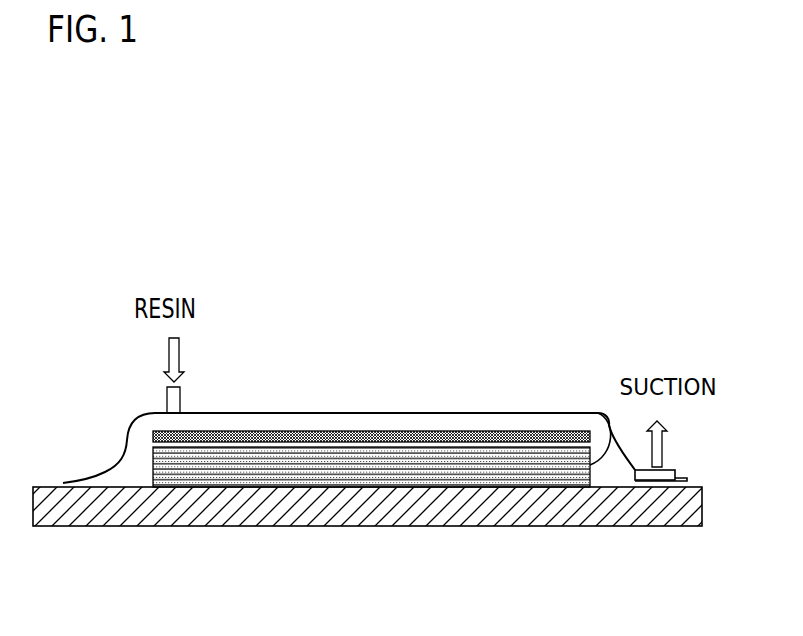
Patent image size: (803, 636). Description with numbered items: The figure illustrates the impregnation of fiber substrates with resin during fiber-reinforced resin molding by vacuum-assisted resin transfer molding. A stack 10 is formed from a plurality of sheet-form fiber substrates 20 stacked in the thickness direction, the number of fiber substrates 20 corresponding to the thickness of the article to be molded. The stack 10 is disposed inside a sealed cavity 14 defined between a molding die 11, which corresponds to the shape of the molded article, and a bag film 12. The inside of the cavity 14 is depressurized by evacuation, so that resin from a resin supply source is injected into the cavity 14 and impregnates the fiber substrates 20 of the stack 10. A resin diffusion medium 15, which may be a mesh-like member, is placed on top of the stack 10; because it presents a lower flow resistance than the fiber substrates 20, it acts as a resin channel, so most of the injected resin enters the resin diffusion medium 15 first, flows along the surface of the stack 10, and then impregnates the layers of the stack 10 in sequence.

The stack 10 is at (606, 416).
The molding die 11 is at (605, 527).
The bag film 12 is at (490, 412).
The cavity 14 is at (382, 421).
The resin diffusion medium 15 is at (275, 430).
The fiber substrate 20 is at (151, 456).